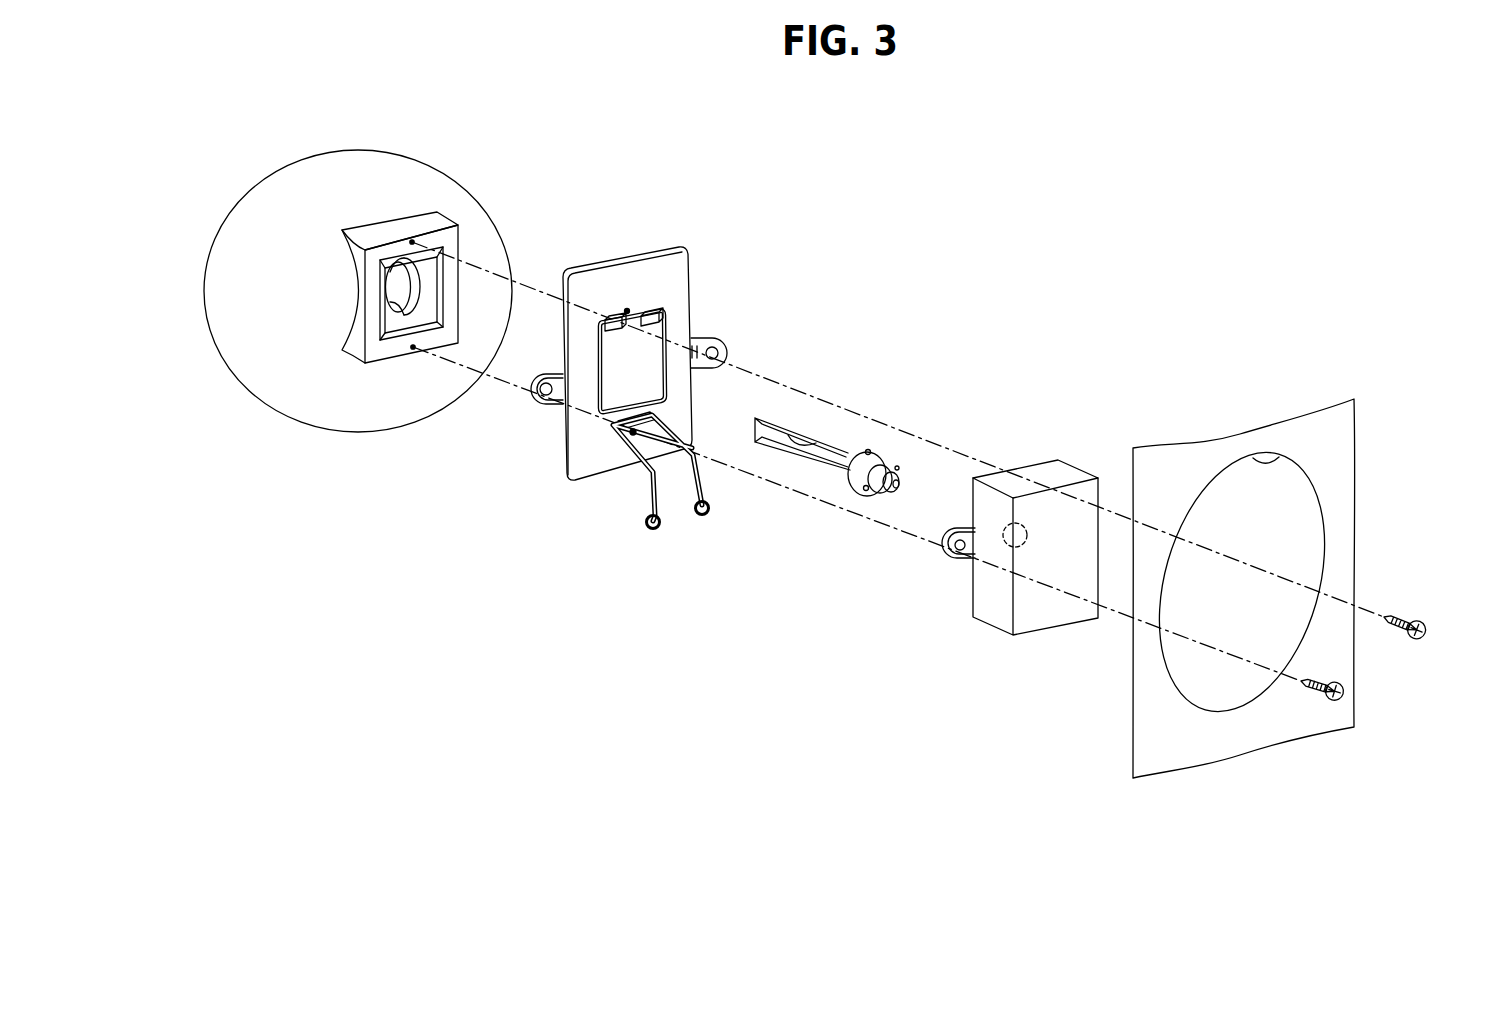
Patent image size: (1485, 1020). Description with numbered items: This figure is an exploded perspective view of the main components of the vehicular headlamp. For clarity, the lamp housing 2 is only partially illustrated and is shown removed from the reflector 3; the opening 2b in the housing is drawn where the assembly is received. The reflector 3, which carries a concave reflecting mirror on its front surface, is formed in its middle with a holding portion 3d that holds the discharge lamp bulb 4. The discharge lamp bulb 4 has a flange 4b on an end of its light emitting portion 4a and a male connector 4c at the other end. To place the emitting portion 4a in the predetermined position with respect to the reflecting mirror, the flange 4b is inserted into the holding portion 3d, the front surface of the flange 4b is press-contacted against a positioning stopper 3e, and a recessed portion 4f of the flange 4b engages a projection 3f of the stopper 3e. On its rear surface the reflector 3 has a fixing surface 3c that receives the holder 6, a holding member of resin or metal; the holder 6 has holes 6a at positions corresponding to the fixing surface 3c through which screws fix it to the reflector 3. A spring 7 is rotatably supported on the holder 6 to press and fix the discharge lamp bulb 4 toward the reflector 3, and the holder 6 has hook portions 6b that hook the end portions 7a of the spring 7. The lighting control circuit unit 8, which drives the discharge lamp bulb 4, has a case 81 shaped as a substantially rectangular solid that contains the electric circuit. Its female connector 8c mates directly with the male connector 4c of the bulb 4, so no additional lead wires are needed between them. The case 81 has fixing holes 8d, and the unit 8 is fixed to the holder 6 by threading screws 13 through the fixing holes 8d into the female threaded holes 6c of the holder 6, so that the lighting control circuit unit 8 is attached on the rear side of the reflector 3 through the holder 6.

The lamp housing 2 is at (1285, 409).
The opening of panel 2b is at (1248, 457).
The reflector 3 is at (324, 144).
The fixing surface 3c is at (405, 349).
The holding portion 3d is at (418, 272).
The positioning stopper 3e is at (399, 262).
The projection 3f is at (400, 264).
The discharge lamp bulb 4 is at (776, 409).
The light emitting portion 4a is at (808, 437).
The flange 4b is at (858, 452).
The male connector 4c is at (879, 465).
The recessed portion 4f is at (868, 449).
The holder 6 is at (594, 257).
The holes 6a is at (627, 308).
The hook portions 6b is at (655, 313).
The female threaded holes 6c is at (712, 346).
The spring 7 is at (637, 458).
The end portions 7a is at (661, 523).
The lighting control circuit unit 8 is at (1004, 461).
The case 81 is at (1027, 477).
The female connector 8c is at (1030, 527).
The fixing holes 8d is at (960, 541).
The screws 13 is at (1415, 640).